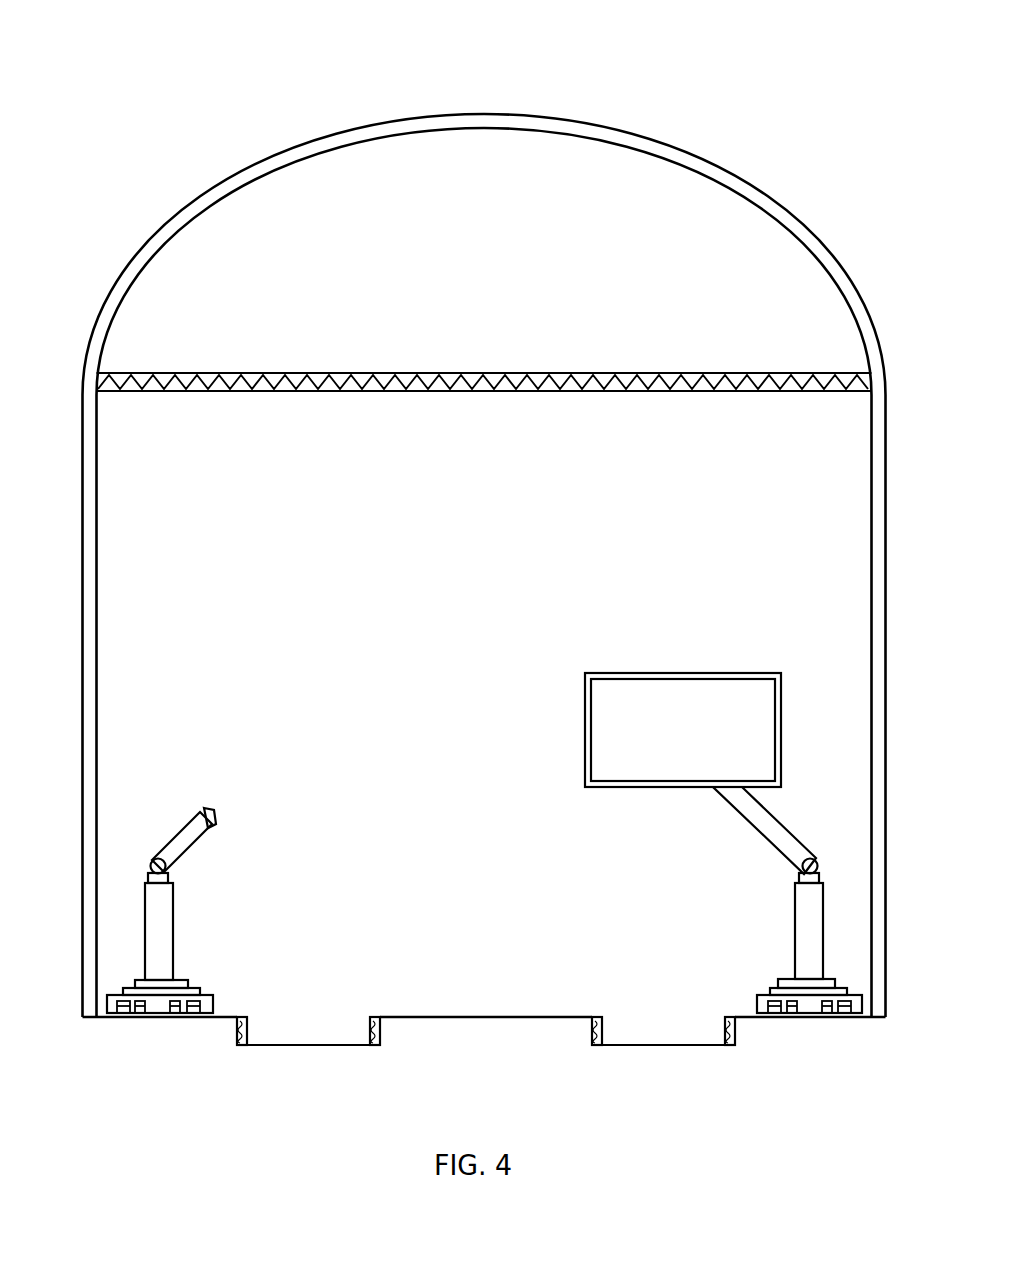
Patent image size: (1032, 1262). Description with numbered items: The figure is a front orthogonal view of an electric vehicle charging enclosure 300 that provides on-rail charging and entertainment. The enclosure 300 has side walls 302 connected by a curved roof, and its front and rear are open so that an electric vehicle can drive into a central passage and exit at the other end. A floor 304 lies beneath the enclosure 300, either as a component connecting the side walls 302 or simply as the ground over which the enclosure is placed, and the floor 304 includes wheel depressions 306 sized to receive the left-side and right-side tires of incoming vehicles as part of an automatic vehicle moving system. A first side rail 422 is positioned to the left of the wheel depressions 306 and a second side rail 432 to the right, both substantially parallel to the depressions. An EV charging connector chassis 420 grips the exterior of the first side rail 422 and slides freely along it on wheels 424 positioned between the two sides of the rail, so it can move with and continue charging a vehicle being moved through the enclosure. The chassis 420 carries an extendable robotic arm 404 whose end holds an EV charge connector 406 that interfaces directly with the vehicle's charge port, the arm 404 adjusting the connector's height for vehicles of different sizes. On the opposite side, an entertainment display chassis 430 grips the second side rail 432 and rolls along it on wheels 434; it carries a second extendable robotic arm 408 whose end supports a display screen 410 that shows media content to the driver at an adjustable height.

The electric vehicle charging enclosure 300 is at (226, 96).
The side walls 302 is at (82, 587).
The floor 304 is at (480, 1018).
The wheel depressions 306 is at (648, 1047).
The extendable robotic arm 404 is at (142, 950).
The EV charge connector 406 is at (188, 822).
The extendable robotic arm 408 is at (823, 892).
The display screen 410 is at (722, 673).
The EV charging connector chassis 420 is at (197, 1017).
The first side rail 422 is at (123, 1017).
The wheels 424 is at (137, 1015).
The entertainment display chassis 430 is at (857, 1017).
The second side rail 432 is at (777, 1017).
The wheels 434 is at (832, 1017).